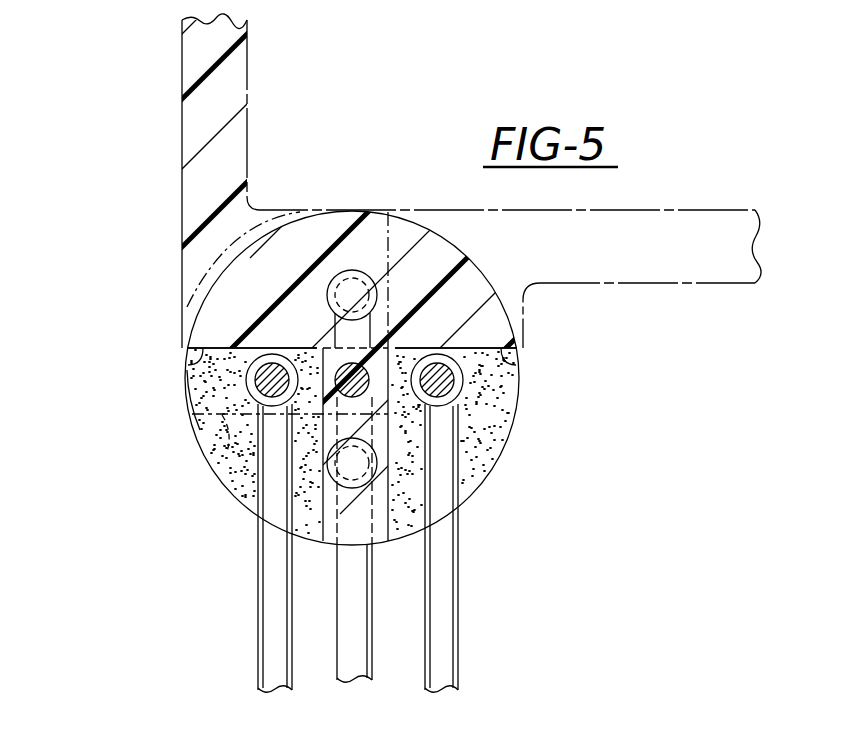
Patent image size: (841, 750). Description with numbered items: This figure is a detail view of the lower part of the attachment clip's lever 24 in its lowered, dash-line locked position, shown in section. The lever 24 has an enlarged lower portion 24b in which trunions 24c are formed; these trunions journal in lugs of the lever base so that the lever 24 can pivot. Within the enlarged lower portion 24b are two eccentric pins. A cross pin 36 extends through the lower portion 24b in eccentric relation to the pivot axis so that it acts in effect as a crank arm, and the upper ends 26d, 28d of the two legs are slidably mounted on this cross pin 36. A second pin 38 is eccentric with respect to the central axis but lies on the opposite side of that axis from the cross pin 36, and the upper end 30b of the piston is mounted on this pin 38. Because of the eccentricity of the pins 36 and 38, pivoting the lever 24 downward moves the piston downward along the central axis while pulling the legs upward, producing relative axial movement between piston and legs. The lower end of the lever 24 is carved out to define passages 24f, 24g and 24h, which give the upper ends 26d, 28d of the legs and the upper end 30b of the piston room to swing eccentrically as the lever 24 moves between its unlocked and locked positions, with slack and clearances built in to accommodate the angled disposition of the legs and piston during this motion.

The lever 24 is at (162, 115).
The enlarged lower portion 24b is at (187, 402).
The trunions 24c is at (352, 400).
The passage 24f is at (207, 349).
The passage 24h is at (312, 359).
The passage 24g is at (208, 455).
The upper end of leg 26d is at (256, 408).
The upper end of leg 28d is at (190, 547).
The upper end of piston 30b is at (455, 458).
The cross pin 36 is at (266, 356).
The pin 38 is at (458, 401).